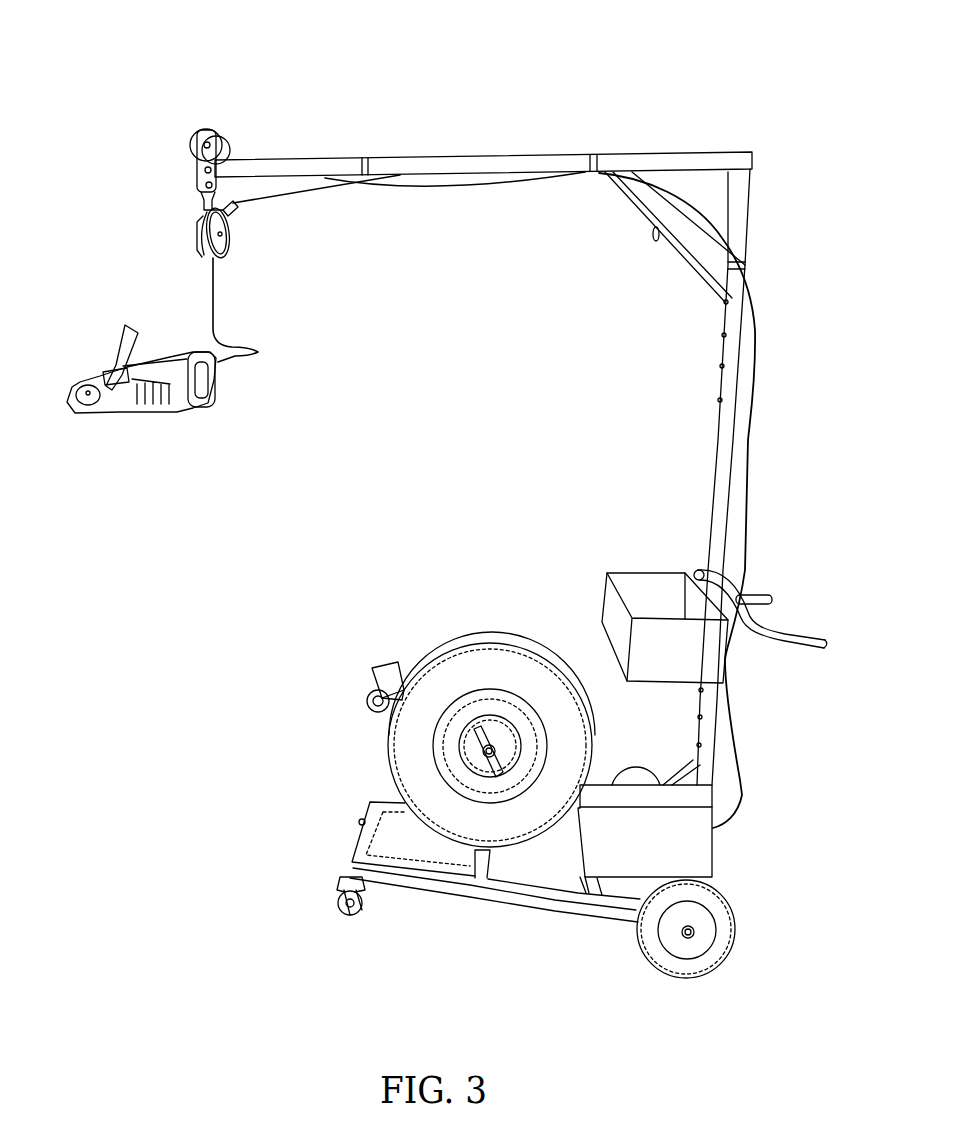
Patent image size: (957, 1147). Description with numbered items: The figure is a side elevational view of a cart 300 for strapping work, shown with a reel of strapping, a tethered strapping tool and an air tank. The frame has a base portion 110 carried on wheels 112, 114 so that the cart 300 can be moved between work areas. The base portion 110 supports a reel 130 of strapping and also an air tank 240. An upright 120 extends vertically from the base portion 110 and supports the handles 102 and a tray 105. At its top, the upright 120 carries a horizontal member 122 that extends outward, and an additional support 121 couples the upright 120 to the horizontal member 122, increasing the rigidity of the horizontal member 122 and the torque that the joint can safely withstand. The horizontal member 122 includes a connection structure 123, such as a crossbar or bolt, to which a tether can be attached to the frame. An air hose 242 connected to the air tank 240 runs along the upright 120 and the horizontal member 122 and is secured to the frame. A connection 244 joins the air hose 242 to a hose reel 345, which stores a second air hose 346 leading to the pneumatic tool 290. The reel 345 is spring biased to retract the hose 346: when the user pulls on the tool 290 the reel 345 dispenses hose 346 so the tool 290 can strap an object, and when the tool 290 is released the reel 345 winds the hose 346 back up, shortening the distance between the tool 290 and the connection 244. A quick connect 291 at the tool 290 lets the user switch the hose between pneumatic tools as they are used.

The cart 300 is at (126, 45).
The horizontal member 122 is at (488, 155).
The connection structure 123 is at (198, 172).
The connection 244 is at (240, 208).
The reel 345 is at (230, 246).
The air hose 346 is at (216, 298).
The quick connect 291 is at (218, 372).
The pneumatic tool 290 is at (180, 416).
The support 121 is at (652, 220).
The upright 120 is at (712, 422).
The tray 105 is at (606, 600).
The handles 102 is at (806, 630).
The reel of strapping 130 is at (386, 746).
The air hose 242 is at (742, 795).
The air tank 240 is at (716, 845).
The wheel 112 is at (350, 918).
The base portion 110 is at (507, 905).
The wheel 114 is at (688, 979).